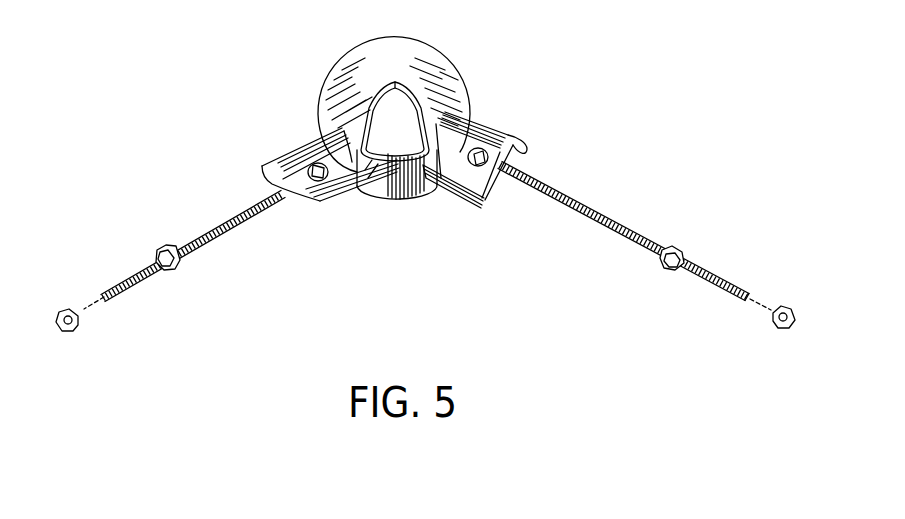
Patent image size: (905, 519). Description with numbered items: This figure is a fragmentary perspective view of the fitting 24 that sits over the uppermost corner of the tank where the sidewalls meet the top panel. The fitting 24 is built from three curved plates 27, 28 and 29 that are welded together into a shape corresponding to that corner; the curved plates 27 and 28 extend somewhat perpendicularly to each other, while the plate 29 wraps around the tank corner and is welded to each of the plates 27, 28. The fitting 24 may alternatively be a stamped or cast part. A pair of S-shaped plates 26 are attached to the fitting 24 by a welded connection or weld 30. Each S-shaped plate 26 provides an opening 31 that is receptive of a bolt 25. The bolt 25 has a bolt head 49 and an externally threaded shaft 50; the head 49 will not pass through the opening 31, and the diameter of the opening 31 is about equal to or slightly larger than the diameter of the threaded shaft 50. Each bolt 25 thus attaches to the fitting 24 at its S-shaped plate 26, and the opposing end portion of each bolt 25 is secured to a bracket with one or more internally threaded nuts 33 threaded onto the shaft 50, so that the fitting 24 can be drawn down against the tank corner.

The fitting 24 is at (410, 63).
The bolt 25 is at (241, 212).
The S-shaped plate 26 is at (328, 198).
The curved plate 27 is at (328, 74).
The curved plate 28 is at (464, 88).
The curved plate 29 is at (399, 203).
The weld 30 is at (350, 166).
The opening 31 is at (316, 186).
The nut 33 is at (176, 268).
The bolt head 49 is at (316, 162).
The externally threaded shaft 50 is at (722, 278).